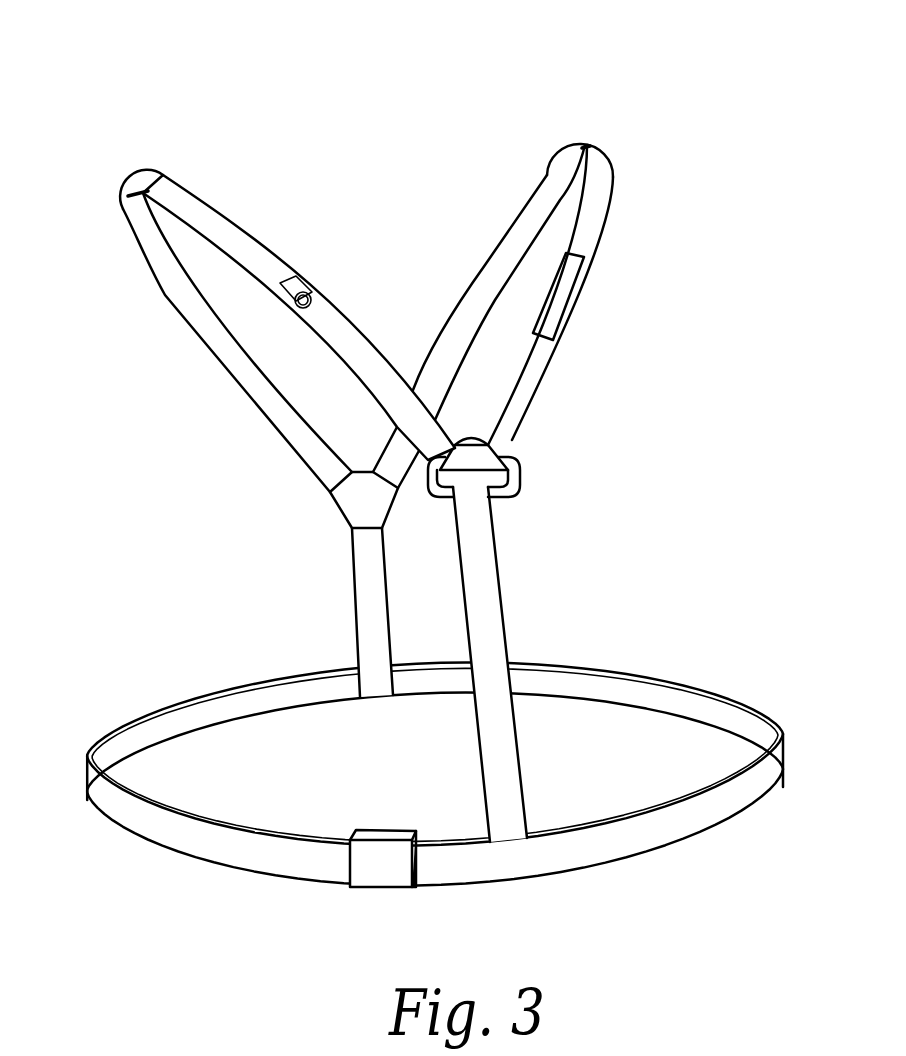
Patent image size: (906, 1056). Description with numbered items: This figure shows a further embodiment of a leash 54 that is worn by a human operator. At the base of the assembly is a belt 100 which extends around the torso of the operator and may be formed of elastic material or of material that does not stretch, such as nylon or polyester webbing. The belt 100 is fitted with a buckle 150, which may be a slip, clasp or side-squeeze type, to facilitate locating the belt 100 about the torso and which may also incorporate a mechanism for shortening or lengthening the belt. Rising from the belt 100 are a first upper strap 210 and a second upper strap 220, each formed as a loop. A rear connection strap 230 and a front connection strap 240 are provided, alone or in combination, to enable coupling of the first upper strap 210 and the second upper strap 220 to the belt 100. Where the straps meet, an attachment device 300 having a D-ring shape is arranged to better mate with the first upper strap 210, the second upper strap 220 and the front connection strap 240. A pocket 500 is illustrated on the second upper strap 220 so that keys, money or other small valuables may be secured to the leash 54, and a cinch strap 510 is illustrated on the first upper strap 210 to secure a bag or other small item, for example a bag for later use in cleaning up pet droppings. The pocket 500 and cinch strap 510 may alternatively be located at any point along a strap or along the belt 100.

The leash 54 is at (487, 72).
The belt 100 is at (783, 740).
The buckle 150 is at (398, 885).
The first upper strap 210 is at (140, 192).
The second upper strap 220 is at (590, 143).
The rear connection strap 230 is at (349, 570).
The front connection strap 240 is at (505, 605).
The attachment device 300 is at (522, 470).
The pocket 500 is at (563, 293).
The cinch strap 510 is at (312, 296).